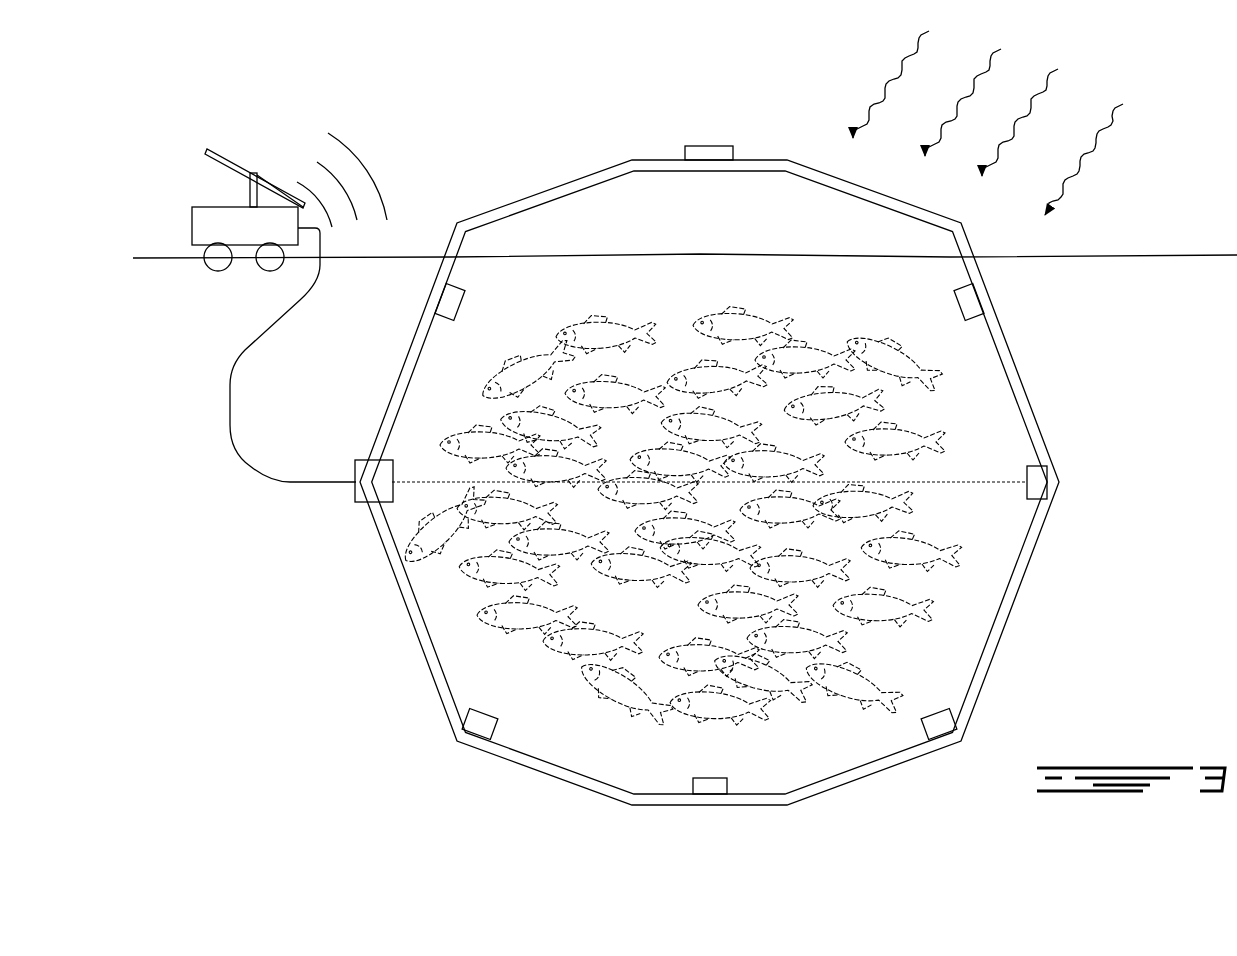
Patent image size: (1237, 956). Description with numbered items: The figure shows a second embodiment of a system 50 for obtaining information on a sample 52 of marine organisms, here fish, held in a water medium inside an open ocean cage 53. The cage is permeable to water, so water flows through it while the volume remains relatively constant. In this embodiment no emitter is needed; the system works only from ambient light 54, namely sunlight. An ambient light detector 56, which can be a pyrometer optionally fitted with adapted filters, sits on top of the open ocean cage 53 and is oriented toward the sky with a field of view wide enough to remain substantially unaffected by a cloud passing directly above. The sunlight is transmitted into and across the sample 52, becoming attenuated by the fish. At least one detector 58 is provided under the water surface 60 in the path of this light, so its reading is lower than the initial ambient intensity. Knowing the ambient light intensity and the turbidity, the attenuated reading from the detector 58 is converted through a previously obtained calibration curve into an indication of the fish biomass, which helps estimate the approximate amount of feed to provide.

The system 50 is at (546, 168).
The sample 52 is at (677, 509).
The open ocean cage 53 is at (1017, 369).
The ambient light 54 is at (888, 80).
The ambient light detector 56 is at (711, 150).
The detector 58 is at (473, 722).
The water surface 60 is at (739, 253).